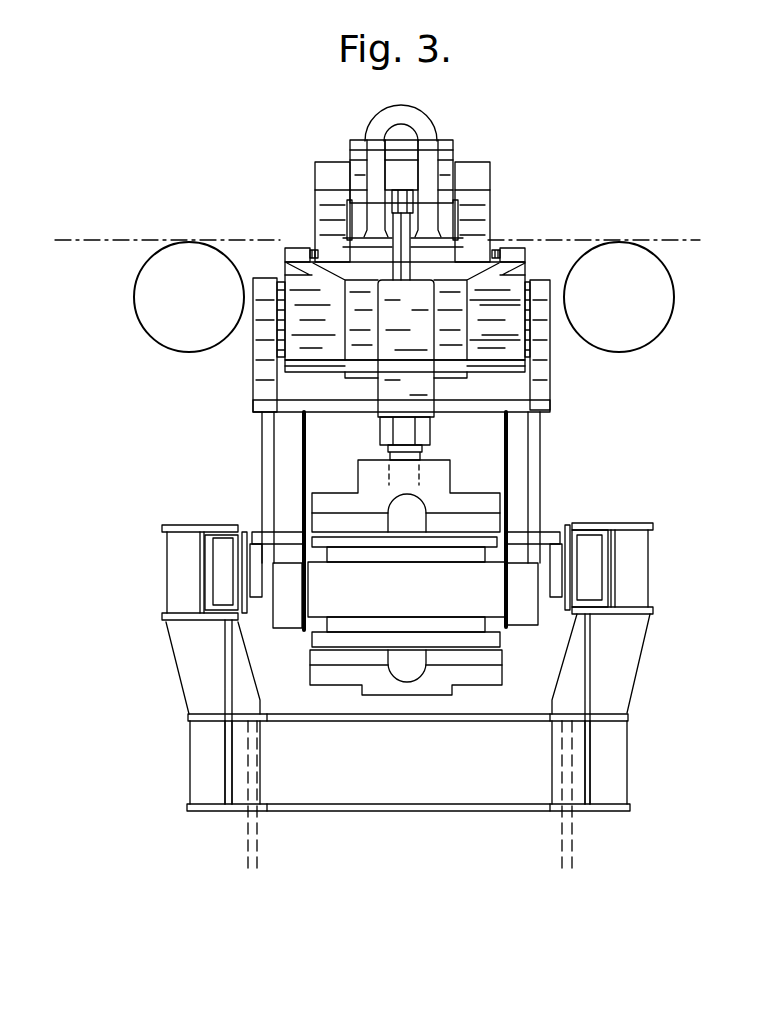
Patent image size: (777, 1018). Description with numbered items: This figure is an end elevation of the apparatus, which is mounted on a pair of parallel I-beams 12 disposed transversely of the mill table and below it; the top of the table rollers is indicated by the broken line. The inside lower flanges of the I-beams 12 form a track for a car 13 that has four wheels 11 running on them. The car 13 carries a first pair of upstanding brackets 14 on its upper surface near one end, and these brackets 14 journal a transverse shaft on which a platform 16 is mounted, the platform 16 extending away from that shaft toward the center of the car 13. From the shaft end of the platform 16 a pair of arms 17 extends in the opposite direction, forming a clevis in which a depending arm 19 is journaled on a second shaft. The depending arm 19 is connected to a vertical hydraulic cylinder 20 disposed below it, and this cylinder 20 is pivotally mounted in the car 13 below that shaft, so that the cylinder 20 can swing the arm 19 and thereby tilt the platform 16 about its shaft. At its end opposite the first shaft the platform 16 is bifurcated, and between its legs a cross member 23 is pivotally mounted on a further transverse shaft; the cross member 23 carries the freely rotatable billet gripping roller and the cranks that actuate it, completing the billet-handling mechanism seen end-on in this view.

The wheels 11 is at (230, 577).
The I-beams 12 is at (197, 523).
The car 13 is at (272, 500).
The upstanding brackets 14 is at (540, 278).
The platform 16 is at (505, 345).
The arms 17 is at (357, 302).
The depending arm 19 is at (400, 368).
The vertical hydraulic cylinder 20 is at (338, 500).
The cross member 23 is at (310, 282).